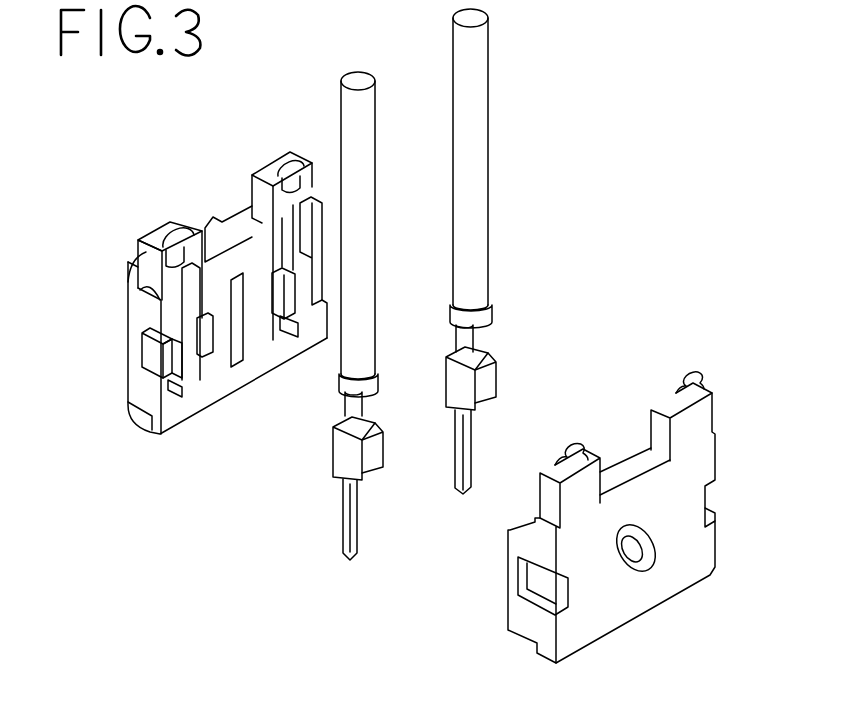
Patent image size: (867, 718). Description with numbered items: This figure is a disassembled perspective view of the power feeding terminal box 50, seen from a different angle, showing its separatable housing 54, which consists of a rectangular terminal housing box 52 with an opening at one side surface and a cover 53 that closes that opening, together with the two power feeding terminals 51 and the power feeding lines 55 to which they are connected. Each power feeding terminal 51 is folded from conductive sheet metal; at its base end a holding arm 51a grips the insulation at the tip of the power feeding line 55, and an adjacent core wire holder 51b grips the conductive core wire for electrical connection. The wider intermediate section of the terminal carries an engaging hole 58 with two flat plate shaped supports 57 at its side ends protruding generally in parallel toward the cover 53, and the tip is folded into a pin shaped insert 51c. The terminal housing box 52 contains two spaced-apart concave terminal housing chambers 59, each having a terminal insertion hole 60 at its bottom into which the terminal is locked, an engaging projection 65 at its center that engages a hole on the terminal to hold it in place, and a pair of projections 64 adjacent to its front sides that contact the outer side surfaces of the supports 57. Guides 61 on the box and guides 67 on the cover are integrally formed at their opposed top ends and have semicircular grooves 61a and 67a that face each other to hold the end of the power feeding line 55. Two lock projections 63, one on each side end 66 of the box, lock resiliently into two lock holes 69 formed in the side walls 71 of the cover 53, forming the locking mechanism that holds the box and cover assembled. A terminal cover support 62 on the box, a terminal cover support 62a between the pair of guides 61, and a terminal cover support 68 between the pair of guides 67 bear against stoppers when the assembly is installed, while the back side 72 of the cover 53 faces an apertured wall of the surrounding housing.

The power feeding terminal box 50 is at (652, 102).
The power feeding terminal 51 is at (338, 547).
The holding arm 51a is at (380, 378).
The core wire holder 51b is at (357, 405).
The pin shaped insert 51c is at (347, 513).
The terminal housing box 52 is at (123, 321).
The cover 53 is at (721, 461).
The housing 54 is at (168, 164).
The power feeding line 55 is at (367, 118).
The support 57 is at (350, 463).
The engaging hole 58 is at (337, 452).
The terminal housing chamber 59 is at (130, 281).
The terminal insertion hole 60 is at (175, 386).
The guide 61 is at (178, 213).
The semicircular groove 61a is at (172, 233).
The terminal cover support 62 is at (136, 263).
The terminal cover support 62a is at (223, 233).
The lock projection 63 is at (150, 345).
The projection 64 is at (167, 366).
The engaging projection 65 is at (190, 358).
The side end 66 is at (133, 381).
The guide 67 is at (598, 470).
The semicircular groove 67a is at (566, 463).
The terminal cover support 68 is at (632, 466).
The lock hole 69 is at (540, 577).
The side wall 71 is at (522, 540).
The back side 72 is at (650, 498).